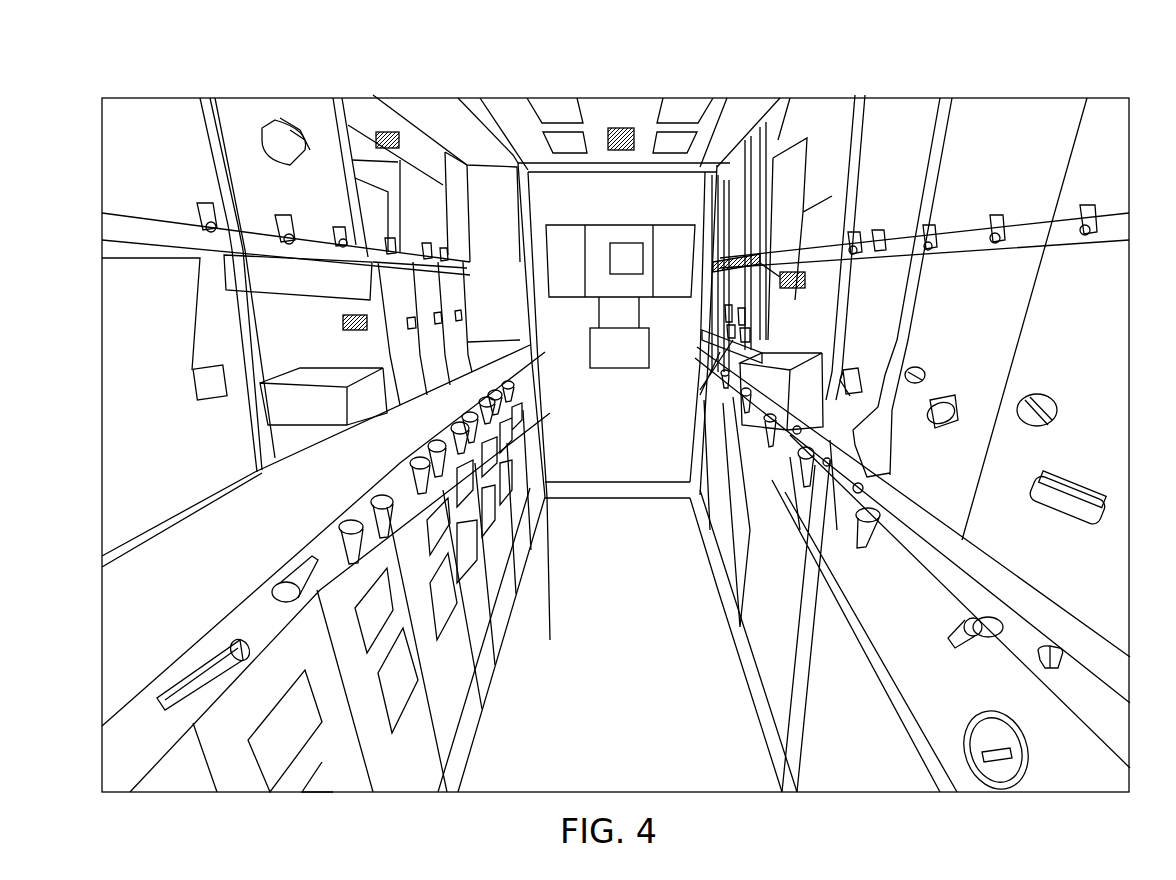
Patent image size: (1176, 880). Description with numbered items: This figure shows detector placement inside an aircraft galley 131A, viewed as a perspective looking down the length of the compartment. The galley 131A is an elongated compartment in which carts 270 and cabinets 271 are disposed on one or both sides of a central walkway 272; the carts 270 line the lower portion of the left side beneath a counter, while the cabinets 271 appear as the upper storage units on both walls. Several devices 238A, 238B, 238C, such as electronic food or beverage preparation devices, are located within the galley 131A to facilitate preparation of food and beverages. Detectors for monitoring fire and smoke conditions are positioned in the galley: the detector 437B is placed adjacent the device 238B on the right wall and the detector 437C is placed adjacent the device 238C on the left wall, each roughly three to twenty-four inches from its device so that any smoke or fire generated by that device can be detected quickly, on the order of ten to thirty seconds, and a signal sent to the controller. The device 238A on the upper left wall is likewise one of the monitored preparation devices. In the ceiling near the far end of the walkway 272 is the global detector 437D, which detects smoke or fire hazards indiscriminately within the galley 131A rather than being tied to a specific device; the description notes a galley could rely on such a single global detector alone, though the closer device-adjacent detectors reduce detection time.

The aircraft galley 131A is at (1046, 70).
The device 238A is at (395, 210).
The device 238B is at (793, 360).
The device 238C is at (328, 303).
The detector 437B is at (760, 263).
The detector 437C is at (348, 333).
The global detector 437D is at (615, 128).
The carts 270 is at (500, 580).
The cabinets 271 is at (286, 158).
The walkway 272 is at (698, 750).